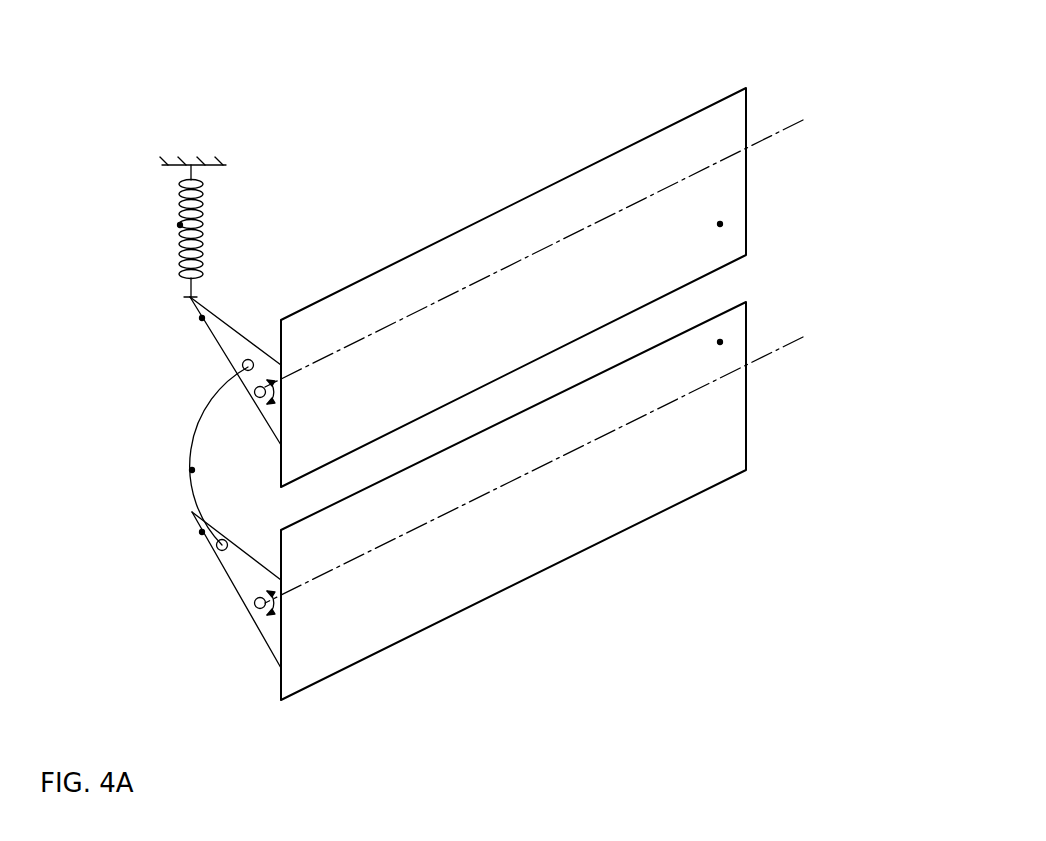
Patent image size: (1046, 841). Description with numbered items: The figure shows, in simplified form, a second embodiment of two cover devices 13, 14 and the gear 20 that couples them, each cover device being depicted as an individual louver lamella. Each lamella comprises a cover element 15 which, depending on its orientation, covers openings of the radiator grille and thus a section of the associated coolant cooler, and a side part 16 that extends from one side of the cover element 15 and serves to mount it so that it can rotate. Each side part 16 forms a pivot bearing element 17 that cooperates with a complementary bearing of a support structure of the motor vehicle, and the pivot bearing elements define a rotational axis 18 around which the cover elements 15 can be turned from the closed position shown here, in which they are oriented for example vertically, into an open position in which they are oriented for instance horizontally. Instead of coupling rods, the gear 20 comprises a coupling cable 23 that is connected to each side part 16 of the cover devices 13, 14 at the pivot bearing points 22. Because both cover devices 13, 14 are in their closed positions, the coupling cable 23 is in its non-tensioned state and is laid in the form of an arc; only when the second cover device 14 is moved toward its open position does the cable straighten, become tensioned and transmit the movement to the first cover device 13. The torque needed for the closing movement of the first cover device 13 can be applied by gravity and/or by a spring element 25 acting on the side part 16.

The first cover device 13 is at (762, 90).
The second cover device 14 is at (762, 290).
The cover element 15 is at (720, 224).
The side part 16 is at (202, 318).
The pivot bearing element 17 is at (254, 394).
The rotational axis 18 is at (780, 138).
The gear 20 is at (165, 368).
The pivot bearing point 22 is at (252, 357).
The coupling cable 23 is at (192, 470).
The spring element 25 is at (180, 225).